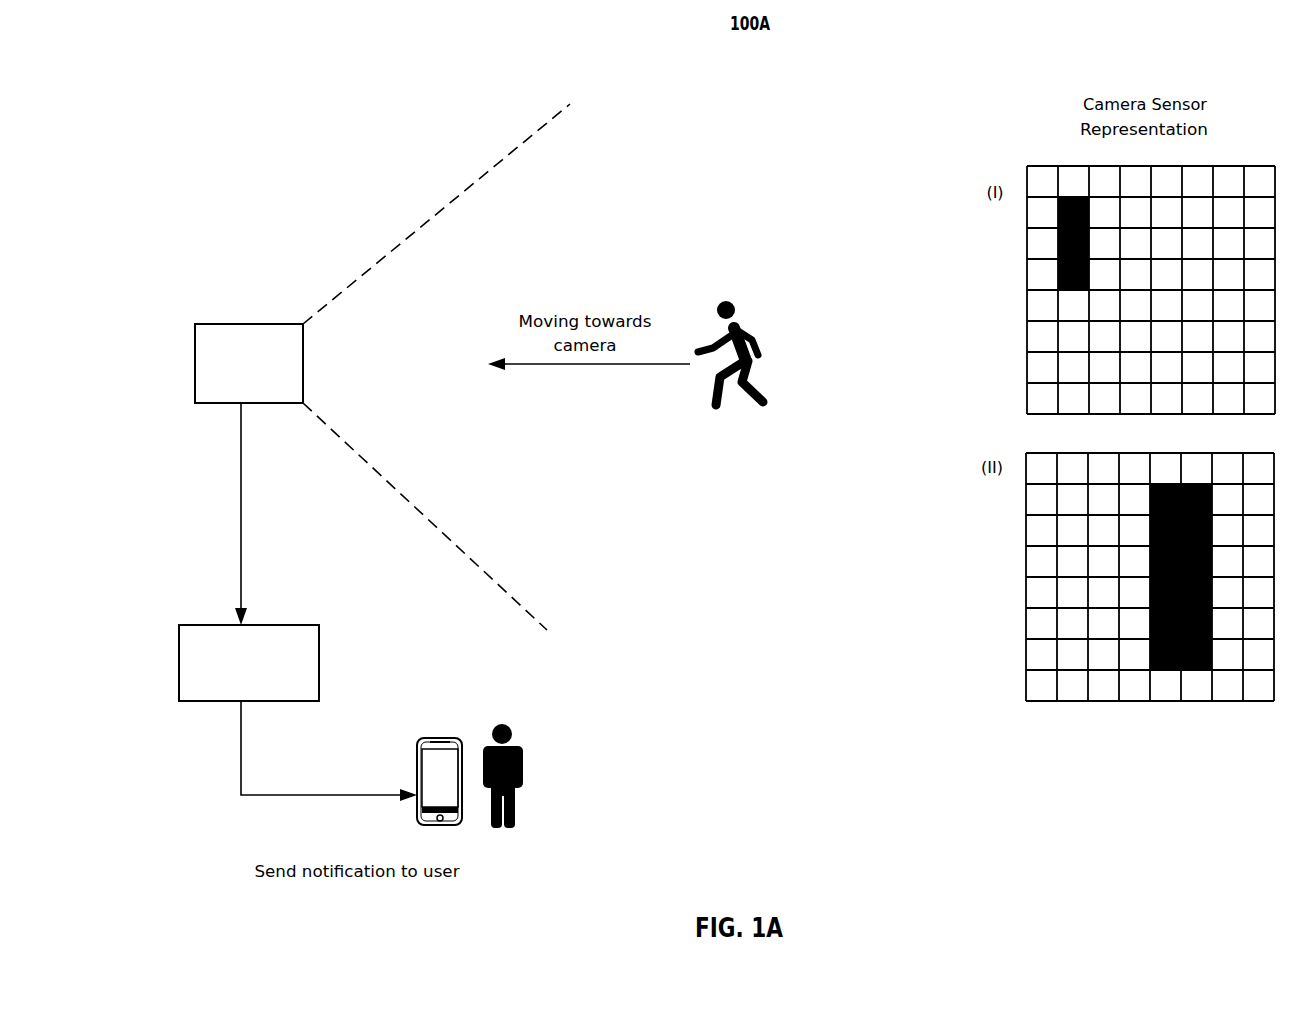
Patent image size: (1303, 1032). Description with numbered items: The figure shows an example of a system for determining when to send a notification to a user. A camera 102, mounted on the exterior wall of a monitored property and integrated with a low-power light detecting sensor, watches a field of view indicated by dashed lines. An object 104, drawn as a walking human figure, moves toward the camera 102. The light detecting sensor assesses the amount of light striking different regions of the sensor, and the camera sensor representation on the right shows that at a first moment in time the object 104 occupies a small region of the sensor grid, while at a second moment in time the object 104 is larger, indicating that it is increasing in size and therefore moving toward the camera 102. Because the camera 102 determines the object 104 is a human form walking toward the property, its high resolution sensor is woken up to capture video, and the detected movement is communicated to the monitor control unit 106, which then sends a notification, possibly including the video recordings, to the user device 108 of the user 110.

The camera 102 is at (249, 363).
The object 104 is at (732, 303).
The monitor control unit 106 is at (249, 663).
The user device 108 is at (433, 737).
The user 110 is at (515, 725).